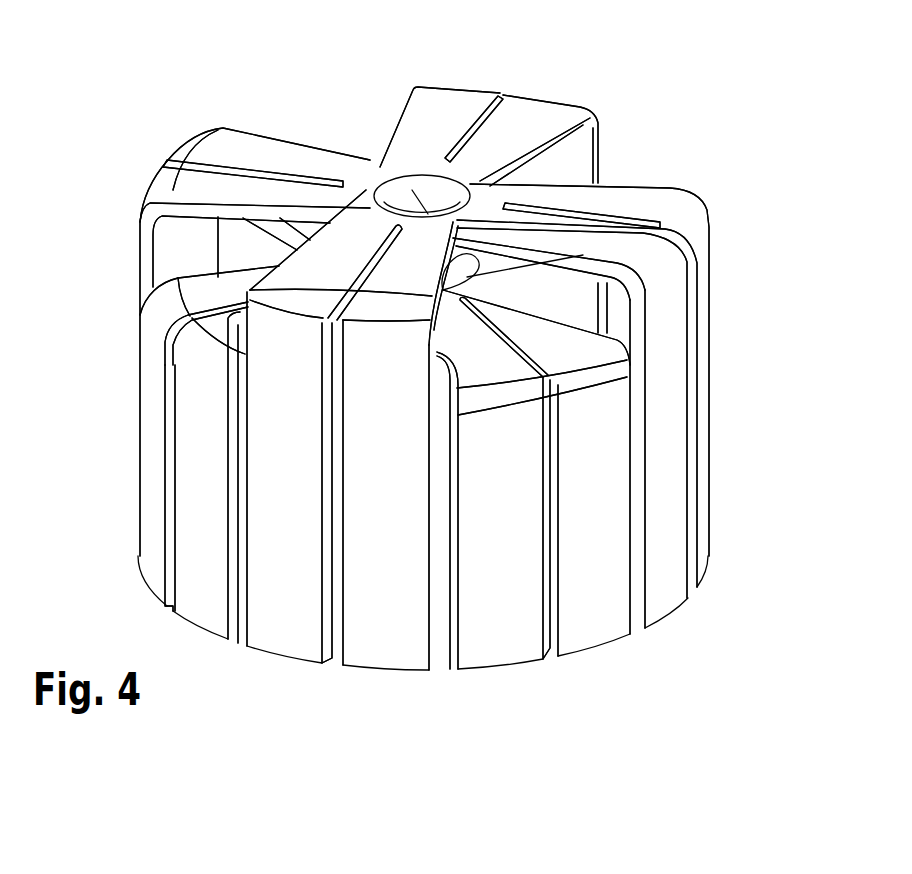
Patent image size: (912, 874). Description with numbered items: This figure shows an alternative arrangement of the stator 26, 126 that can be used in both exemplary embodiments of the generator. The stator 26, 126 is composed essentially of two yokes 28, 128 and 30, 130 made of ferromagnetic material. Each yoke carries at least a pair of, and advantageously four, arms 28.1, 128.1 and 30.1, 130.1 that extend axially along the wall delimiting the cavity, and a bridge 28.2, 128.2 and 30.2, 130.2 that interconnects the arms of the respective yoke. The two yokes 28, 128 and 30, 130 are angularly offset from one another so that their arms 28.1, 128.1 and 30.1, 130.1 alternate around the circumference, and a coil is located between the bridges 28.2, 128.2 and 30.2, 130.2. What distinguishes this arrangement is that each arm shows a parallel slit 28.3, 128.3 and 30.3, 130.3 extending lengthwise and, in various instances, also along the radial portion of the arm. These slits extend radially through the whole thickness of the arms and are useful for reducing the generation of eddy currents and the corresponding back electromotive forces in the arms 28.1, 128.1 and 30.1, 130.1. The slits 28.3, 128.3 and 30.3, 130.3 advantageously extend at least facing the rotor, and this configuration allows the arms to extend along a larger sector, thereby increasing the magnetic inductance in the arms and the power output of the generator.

The stator 26 is at (130, 158).
The stator 126 is at (283, 292).
The yoke 28 is at (585, 88).
The yoke 128 is at (606, 325).
The arm 28.1 is at (383, 620).
The arm 128.1 is at (352, 527).
The bridge 28.2 is at (323, 257).
The bridge 128.2 is at (350, 199).
The slit 28.3 is at (333, 660).
The slit 128.3 is at (305, 576).
The yoke 30 is at (130, 372).
The yoke 130 is at (200, 423).
The arm 30.1 is at (591, 578).
The arm 130.1 is at (566, 520).
The bridge 30.2 is at (573, 337).
The bridge 130.2 is at (652, 313).
The slit 30.3 is at (547, 648).
The slit 130.3 is at (549, 596).